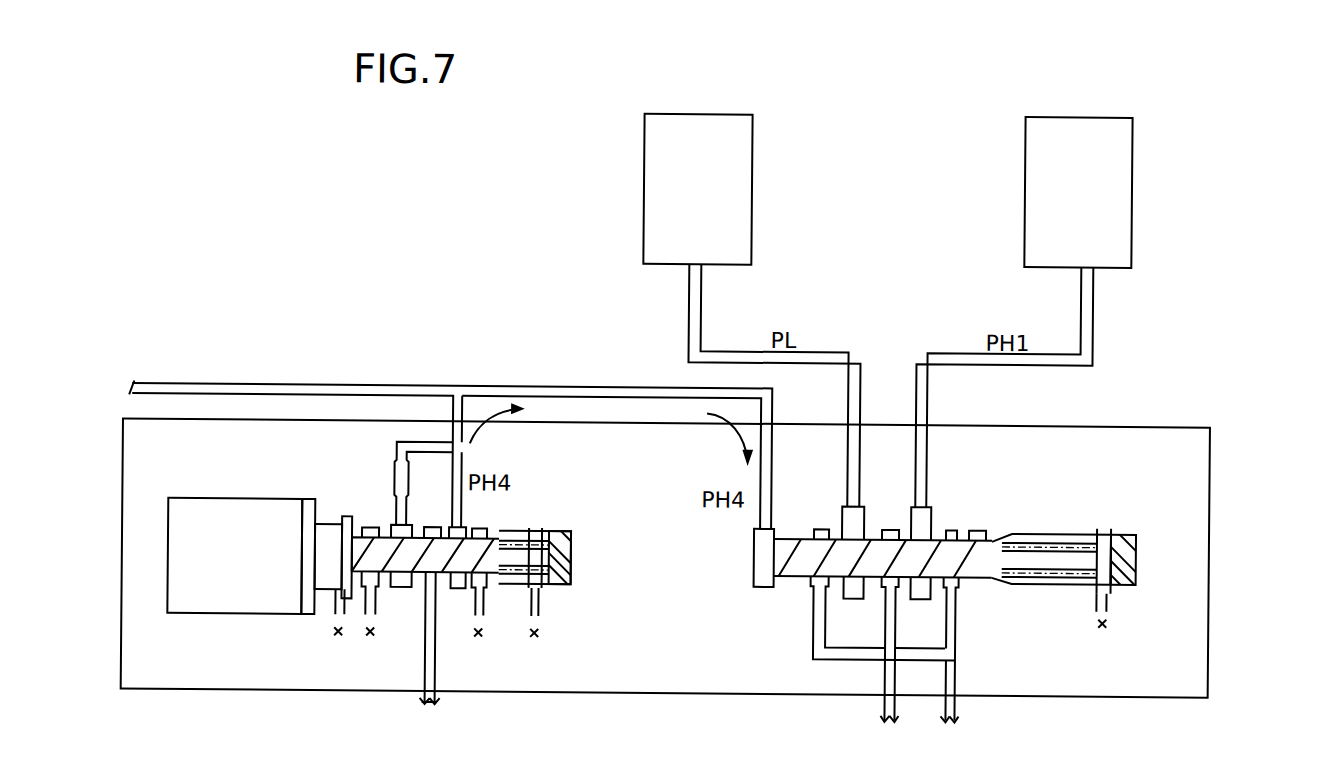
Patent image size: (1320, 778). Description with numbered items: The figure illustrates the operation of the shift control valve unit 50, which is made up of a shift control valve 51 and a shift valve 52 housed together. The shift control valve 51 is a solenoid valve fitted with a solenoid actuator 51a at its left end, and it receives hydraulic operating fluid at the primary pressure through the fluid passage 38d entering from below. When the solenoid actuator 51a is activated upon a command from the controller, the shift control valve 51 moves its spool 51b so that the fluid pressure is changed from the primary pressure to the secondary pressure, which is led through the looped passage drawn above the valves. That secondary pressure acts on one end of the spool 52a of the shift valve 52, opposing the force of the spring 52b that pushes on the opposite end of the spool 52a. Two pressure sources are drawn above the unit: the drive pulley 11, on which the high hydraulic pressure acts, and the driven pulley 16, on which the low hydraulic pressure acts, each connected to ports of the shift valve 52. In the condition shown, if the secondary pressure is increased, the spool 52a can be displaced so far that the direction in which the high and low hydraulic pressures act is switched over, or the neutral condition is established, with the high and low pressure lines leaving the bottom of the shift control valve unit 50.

The shift control valve unit 50 is at (1212, 447).
The shift control valve 51 is at (379, 499).
The solenoid actuator 51a is at (232, 501).
The spool 51b is at (493, 542).
The shift valve 52 is at (1024, 607).
The spool 52a is at (962, 538).
The spring 52b is at (1150, 557).
The driven pulley 16 is at (751, 310).
The drive pulley 11 is at (1023, 312).
The fluid passage 38d is at (428, 675).